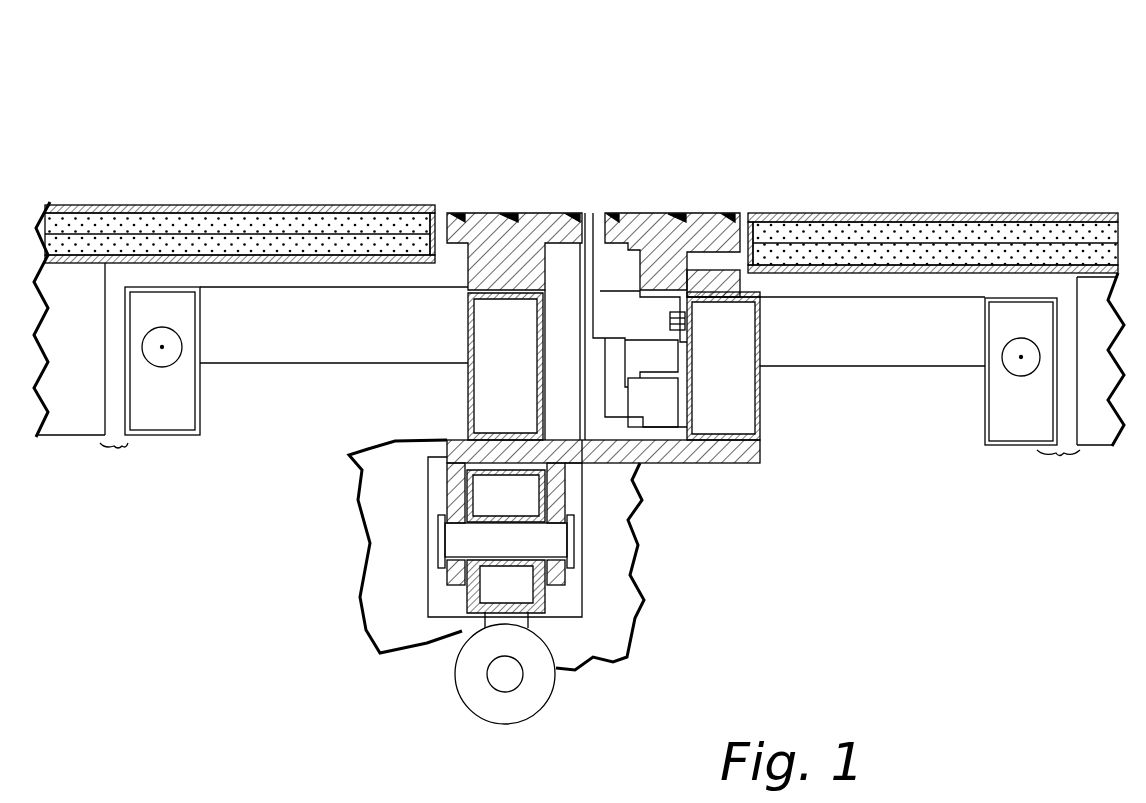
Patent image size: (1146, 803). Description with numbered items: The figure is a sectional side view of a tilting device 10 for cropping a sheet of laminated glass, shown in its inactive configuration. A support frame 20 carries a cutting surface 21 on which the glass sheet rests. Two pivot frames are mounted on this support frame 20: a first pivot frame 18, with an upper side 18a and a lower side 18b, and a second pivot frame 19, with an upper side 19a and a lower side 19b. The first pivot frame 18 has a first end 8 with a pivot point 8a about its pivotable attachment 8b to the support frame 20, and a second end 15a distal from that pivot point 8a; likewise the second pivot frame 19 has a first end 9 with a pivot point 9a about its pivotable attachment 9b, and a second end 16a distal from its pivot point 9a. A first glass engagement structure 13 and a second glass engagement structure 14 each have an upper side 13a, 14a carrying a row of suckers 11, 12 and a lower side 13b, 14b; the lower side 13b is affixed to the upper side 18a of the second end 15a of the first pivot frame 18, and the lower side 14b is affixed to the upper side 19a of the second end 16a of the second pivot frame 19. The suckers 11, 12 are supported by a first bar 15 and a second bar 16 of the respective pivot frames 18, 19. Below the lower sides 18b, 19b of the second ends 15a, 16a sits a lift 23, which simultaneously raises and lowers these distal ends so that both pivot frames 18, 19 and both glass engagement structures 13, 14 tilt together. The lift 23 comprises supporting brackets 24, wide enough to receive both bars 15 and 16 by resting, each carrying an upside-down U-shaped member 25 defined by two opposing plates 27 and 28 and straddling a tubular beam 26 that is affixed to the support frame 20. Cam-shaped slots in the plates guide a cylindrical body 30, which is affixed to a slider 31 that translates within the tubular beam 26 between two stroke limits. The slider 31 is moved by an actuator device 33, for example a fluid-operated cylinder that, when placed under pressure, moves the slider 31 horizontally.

The first end 8 is at (140, 437).
The pivot point 8a is at (162, 347).
The pivotable attachment 8b is at (162, 347).
The first end 9 is at (1017, 447).
The pivot point 9a is at (1021, 357).
The pivotable attachment 9b is at (1021, 357).
The tilting device 10 is at (726, 500).
The suckers 11 is at (591, 248).
The suckers 12 is at (607, 233).
The first glass engagement structure 13 is at (474, 203).
The upper side 13a is at (492, 200).
The lower side 13b is at (525, 271).
The second glass engagement structure 14 is at (726, 161).
The upper side 14a is at (661, 198).
The lower side 14b is at (721, 278).
The first bar 15 is at (487, 312).
The second end 15a is at (592, 213).
The second bar 16 is at (740, 330).
The second end 16a is at (672, 352).
The first pivot frame 18 is at (334, 329).
The upper side 18a is at (260, 274).
The lower side 18b is at (287, 376).
The second pivot frame 19 is at (872, 325).
The upper side 19a is at (877, 281).
The lower side 19b is at (942, 378).
The support frame 20 is at (111, 270).
The cutting surface 21 is at (214, 201).
The lift 23 is at (607, 492).
The supporting bracket 24 is at (740, 464).
The upside-down U-shaped member 25 is at (460, 465).
The tubular beam 26 is at (455, 600).
The opposing plate 27 is at (460, 493).
The opposing plate 28 is at (555, 502).
The cylindrical body 30 is at (518, 547).
The slider 31 is at (528, 625).
The actuator device 33 is at (468, 687).